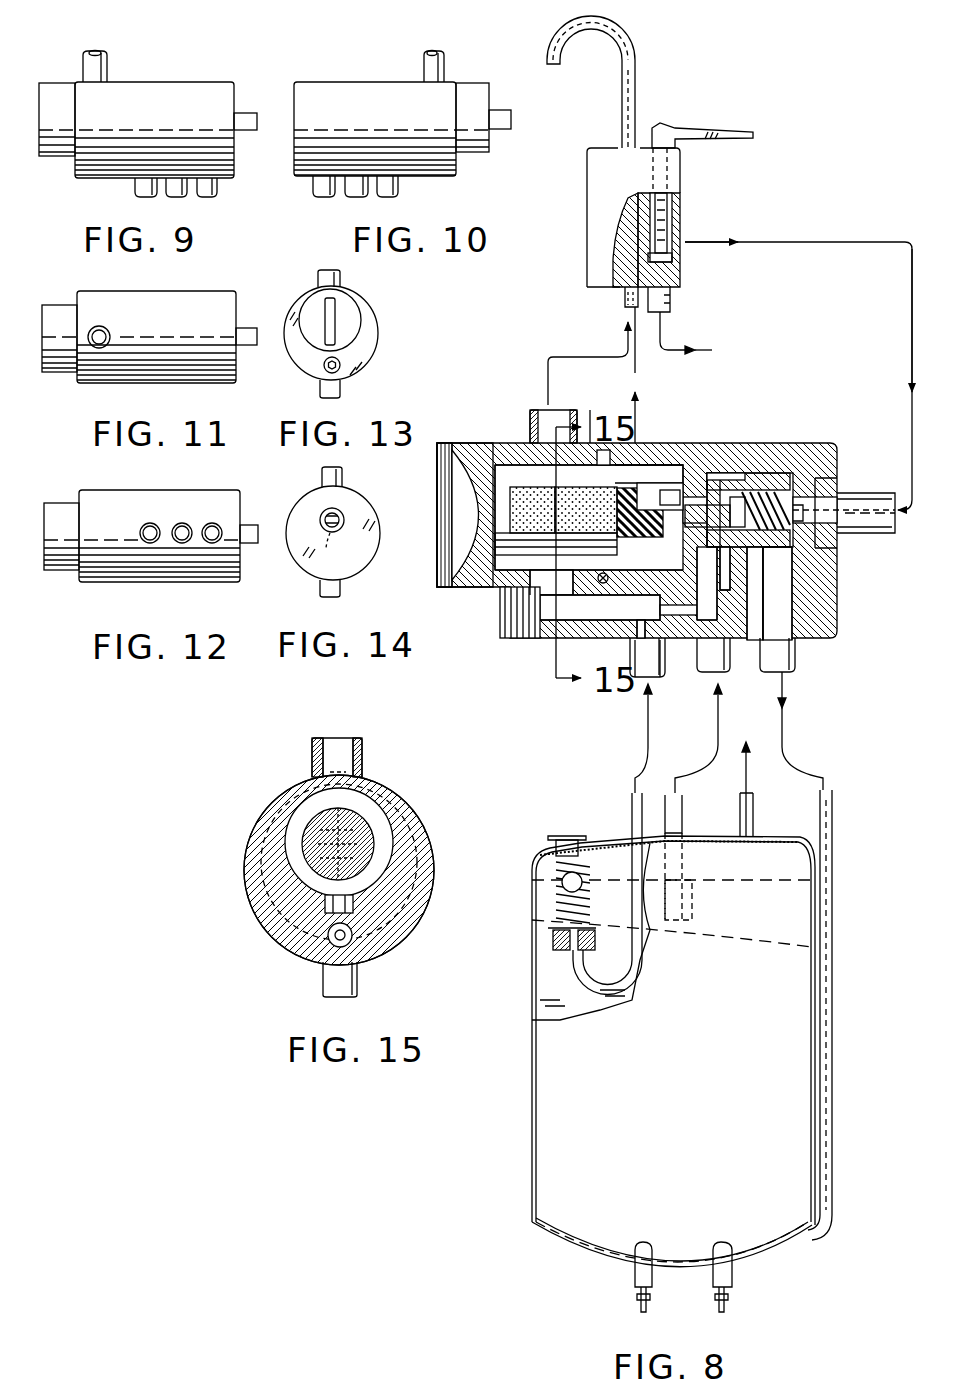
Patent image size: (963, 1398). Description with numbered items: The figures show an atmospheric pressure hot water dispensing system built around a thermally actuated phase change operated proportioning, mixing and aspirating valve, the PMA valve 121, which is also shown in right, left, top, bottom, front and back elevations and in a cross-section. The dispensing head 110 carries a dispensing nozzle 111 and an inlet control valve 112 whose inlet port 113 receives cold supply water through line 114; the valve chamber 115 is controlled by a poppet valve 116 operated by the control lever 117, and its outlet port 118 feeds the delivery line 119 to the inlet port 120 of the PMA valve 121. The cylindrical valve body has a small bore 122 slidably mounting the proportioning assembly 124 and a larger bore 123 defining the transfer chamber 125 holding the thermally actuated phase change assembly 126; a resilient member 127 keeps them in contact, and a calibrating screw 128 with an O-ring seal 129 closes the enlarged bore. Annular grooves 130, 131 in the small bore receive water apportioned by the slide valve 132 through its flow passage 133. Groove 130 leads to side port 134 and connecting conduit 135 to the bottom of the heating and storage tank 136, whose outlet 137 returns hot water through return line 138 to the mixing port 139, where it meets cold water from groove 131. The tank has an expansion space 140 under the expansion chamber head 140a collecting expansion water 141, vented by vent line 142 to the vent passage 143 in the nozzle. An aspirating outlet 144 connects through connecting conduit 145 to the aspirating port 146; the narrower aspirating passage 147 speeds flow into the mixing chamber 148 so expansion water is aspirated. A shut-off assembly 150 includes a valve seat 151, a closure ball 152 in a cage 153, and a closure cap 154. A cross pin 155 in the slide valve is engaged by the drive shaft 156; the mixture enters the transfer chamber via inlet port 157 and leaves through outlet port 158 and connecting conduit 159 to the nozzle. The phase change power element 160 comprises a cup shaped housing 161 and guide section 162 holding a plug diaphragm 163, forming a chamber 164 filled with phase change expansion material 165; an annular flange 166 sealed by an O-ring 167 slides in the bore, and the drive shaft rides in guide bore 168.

In FIG. 8, the dispensing head 110 is at (584, 200).
In FIG. 8, the dispensing nozzle 111 is at (636, 73).
In FIG. 8, the inlet control valve 112 is at (668, 212).
In FIG. 8, the inlet port 113 is at (672, 298).
In FIG. 8, the line 114 is at (665, 346).
In FIG. 8, the valve chamber 115 is at (670, 222).
In FIG. 8, the poppet valve 116 is at (672, 258).
In FIG. 8, the control lever 117 is at (690, 128).
In FIG. 8, the outlet port 118 is at (688, 240).
In FIG. 9, the delivery line 119 is at (243, 115).
In FIG. 10, the delivery line 119 is at (502, 118).
In FIG. 11, the delivery line 119 is at (246, 328).
In FIG. 12, the delivery line 119 is at (246, 543).
In FIG. 14, the delivery line 119 is at (322, 512).
In FIG. 8, the delivery line 119 is at (815, 242).
In FIG. 8, the inlet port 120 is at (825, 490).
In FIG. 9, the PMA valve 121 is at (178, 80).
In FIG. 10, the PMA valve 121 is at (355, 80).
In FIG. 11, the PMA valve 121 is at (200, 288).
In FIG. 13, the PMA valve 121 is at (380, 340).
In FIG. 12, the PMA valve 121 is at (204, 487).
In FIG. 14, the PMA valve 121 is at (380, 531).
In FIG. 8, the PMA valve 121 is at (768, 441).
In FIG. 8, the small bore 122 is at (742, 473).
In FIG. 8, the larger bore 123 is at (700, 470).
In FIG. 8, the proportioning assembly 124 is at (815, 498).
In FIG. 15, the transfer chamber 125 is at (415, 806).
In FIG. 8, the transfer chamber 125 is at (522, 640).
In FIG. 15, the thermally actuated phase change assembly 126 is at (300, 830).
In FIG. 8, the thermally actuated phase change assembly 126 is at (528, 462).
In FIG. 8, the resilient member 127 is at (800, 593).
In FIG. 13, the calibrating screw 128 is at (352, 318).
In FIG. 8, the O-ring seal 129 is at (507, 592).
In FIG. 8, the annular groove 130 is at (768, 473).
In FIG. 8, the annular groove 131 is at (725, 463).
In FIG. 8, the slide valve 132 is at (714, 606).
In FIG. 8, the flow passage 133 is at (742, 570).
In FIG. 8, the side port 134 is at (790, 592).
In FIG. 9, the connecting conduit 135 is at (210, 190).
In FIG. 10, the connecting conduit 135 is at (312, 193).
In FIG. 12, the connecting conduit 135 is at (214, 524).
In FIG. 8, the connecting conduit 135 is at (796, 650).
In FIG. 8, the heating and storage tank 136 is at (548, 1120).
In FIG. 8, the outlet 137 is at (692, 905).
In FIG. 9, the return line 138 is at (180, 192).
In FIG. 10, the return line 138 is at (356, 192).
In FIG. 12, the return line 138 is at (177, 524).
In FIG. 8, the return line 138 is at (720, 668).
In FIG. 8, the mixing port 139 is at (752, 593).
In FIG. 8, the expansion space 140 is at (765, 855).
In FIG. 8, the expansion chamber head 140a is at (598, 843).
In FIG. 8, the expansion water 141 is at (812, 910).
In FIG. 8, the vent line 142 is at (750, 760).
In FIG. 8, the vent passage 143 is at (626, 24).
In FIG. 8, the aspirating outlet 144 is at (588, 948).
In FIG. 9, the connecting conduit 145 is at (138, 188).
In FIG. 10, the connecting conduit 145 is at (396, 190).
In FIG. 12, the connecting conduit 145 is at (141, 530).
In FIG. 15, the connecting conduit 145 is at (357, 985).
In FIG. 8, the connecting conduit 145 is at (640, 700).
In FIG. 15, the aspirating port 146 is at (390, 946).
In FIG. 8, the aspirating port 146 is at (662, 680).
In FIG. 15, the aspirating passage 147 is at (330, 930).
In FIG. 8, the aspirating passage 147 is at (668, 655).
In FIG. 15, the mixing chamber 148 is at (332, 943).
In FIG. 8, the mixing chamber 148 is at (572, 626).
In FIG. 8, the shut-off assembly 150 is at (545, 928).
In FIG. 8, the valve seat 151 is at (585, 930).
In FIG. 8, the closure ball 152 is at (583, 885).
In FIG. 8, the cage 153 is at (548, 897).
In FIG. 8, the closure cap 154 is at (562, 838).
In FIG. 14, the cross pin 155 is at (342, 512).
In FIG. 15, the cross pin 155 is at (250, 887).
In FIG. 8, the cross pin 155 is at (766, 512).
In FIG. 14, the drive shaft 156 is at (333, 540).
In FIG. 15, the drive shaft 156 is at (303, 800).
In FIG. 8, the drive shaft 156 is at (700, 583).
In FIG. 15, the inlet port 157 is at (358, 906).
In FIG. 8, the inlet port 157 is at (552, 591).
In FIG. 15, the outlet port 158 is at (345, 740).
In FIG. 8, the outlet port 158 is at (540, 410).
In FIG. 9, the connecting conduit 159 is at (88, 70).
In FIG. 10, the connecting conduit 159 is at (444, 68).
In FIG. 11, the connecting conduit 159 is at (110, 336).
In FIG. 13, the connecting conduit 159 is at (340, 283).
In FIG. 14, the connecting conduit 159 is at (342, 475).
In FIG. 15, the connecting conduit 159 is at (318, 768).
In FIG. 8, the connecting conduit 159 is at (583, 355).
In FIG. 15, the phase change power element 160 is at (368, 818).
In FIG. 8, the phase change power element 160 is at (600, 607).
In FIG. 8, the cup shaped housing 161 is at (520, 485).
In FIG. 8, the guide section 162 is at (650, 540).
In FIG. 8, the plug diaphragm 163 is at (652, 478).
In FIG. 8, the chamber 164 is at (472, 468).
In FIG. 8, the phase change expansion type material 165 is at (548, 516).
In FIG. 8, the annular flange 166 is at (590, 410).
In FIG. 8, the O-ring 167 is at (608, 457).
In FIG. 8, the guide bore 168 is at (668, 500).